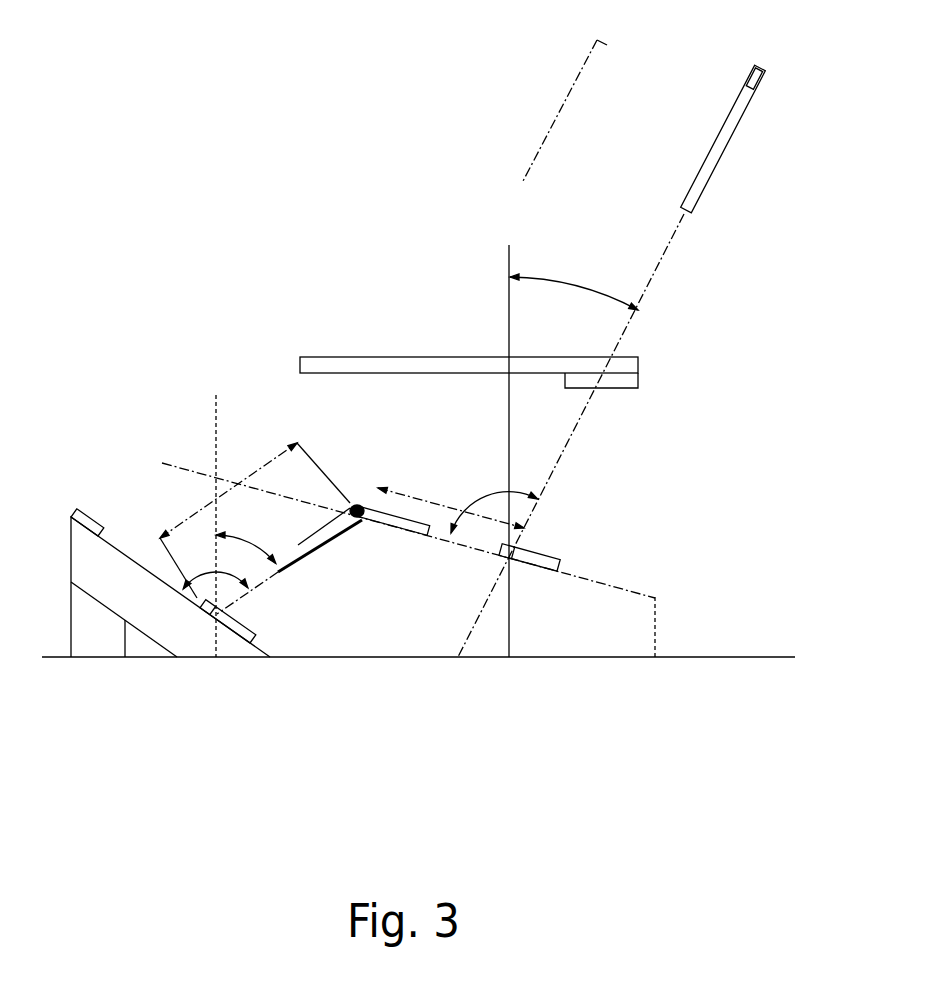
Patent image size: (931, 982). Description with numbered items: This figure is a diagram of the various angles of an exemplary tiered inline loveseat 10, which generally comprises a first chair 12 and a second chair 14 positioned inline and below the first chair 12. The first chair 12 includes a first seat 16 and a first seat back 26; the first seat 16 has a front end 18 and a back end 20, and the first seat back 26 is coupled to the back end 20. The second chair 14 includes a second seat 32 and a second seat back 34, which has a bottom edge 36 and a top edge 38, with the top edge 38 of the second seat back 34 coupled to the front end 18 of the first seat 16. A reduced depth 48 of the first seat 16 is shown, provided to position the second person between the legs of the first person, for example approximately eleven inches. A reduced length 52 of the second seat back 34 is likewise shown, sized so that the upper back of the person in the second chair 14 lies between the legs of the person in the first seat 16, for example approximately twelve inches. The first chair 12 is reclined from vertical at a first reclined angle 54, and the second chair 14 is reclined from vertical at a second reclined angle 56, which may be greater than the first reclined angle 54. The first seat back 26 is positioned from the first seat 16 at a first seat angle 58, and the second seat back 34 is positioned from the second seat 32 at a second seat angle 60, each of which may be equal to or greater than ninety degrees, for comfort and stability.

The tiered inline loveseat 10 is at (126, 124).
The first chair 12 is at (398, 219).
The second chair 14 is at (121, 403).
The first seat 16 is at (431, 533).
The front end 18 is at (355, 503).
The back end 20 is at (505, 565).
The first seat back 26 is at (671, 253).
The second seat 32 is at (118, 543).
The second seat back 34 is at (300, 563).
The bottom edge 36 is at (220, 617).
The top edge 38 is at (357, 520).
The reduced depth 48 is at (452, 510).
The reduced length 52 is at (190, 513).
The first reclined angle 54 is at (580, 288).
The second reclined angle 56 is at (256, 552).
The first seat angle 58 is at (480, 495).
The second seat angle 60 is at (214, 572).